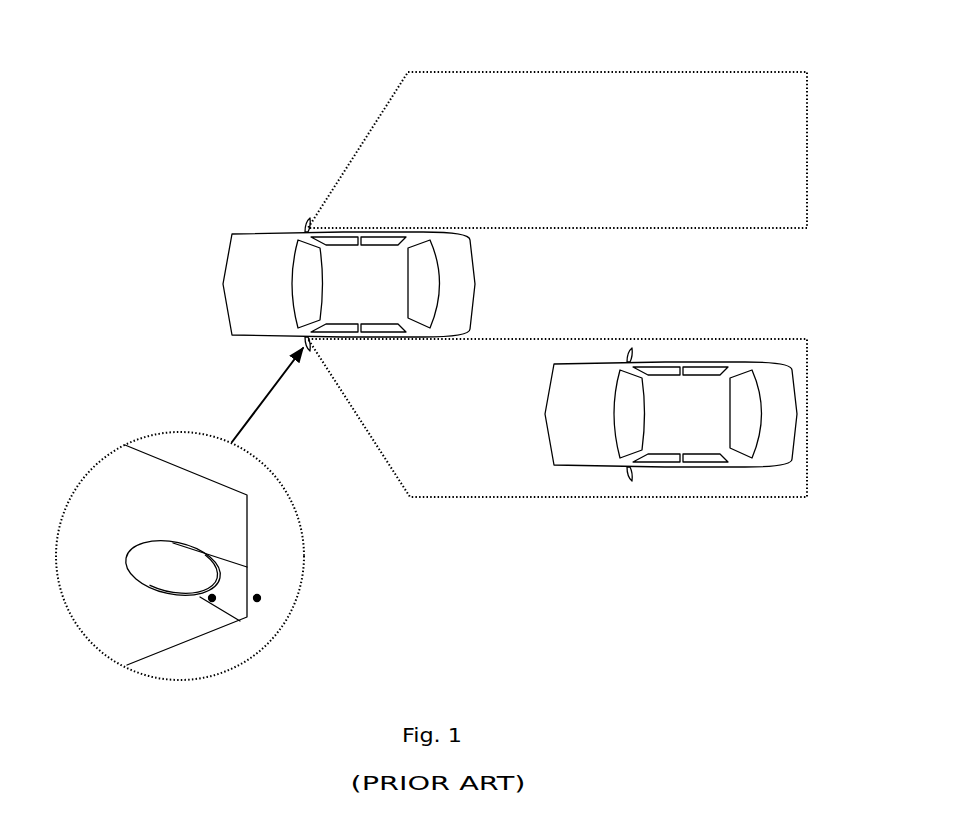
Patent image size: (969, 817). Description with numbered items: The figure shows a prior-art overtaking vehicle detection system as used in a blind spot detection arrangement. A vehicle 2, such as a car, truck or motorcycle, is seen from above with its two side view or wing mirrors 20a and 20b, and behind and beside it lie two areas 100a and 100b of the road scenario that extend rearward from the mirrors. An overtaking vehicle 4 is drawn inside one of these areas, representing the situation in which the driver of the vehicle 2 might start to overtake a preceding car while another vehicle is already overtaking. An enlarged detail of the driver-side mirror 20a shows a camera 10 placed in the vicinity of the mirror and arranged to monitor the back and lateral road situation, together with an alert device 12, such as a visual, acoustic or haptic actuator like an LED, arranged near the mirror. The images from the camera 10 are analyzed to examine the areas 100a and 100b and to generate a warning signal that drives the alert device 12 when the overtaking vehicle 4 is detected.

The vehicle 2 is at (246, 232).
The overtaking vehicle 4 is at (748, 360).
The camera 10 is at (213, 612).
The alert device 12 is at (262, 590).
The side view mirror 20a is at (298, 343).
The side view mirror 20b is at (308, 217).
The area of the road scenario 100a is at (513, 498).
The area of the road scenario 100b is at (577, 70).